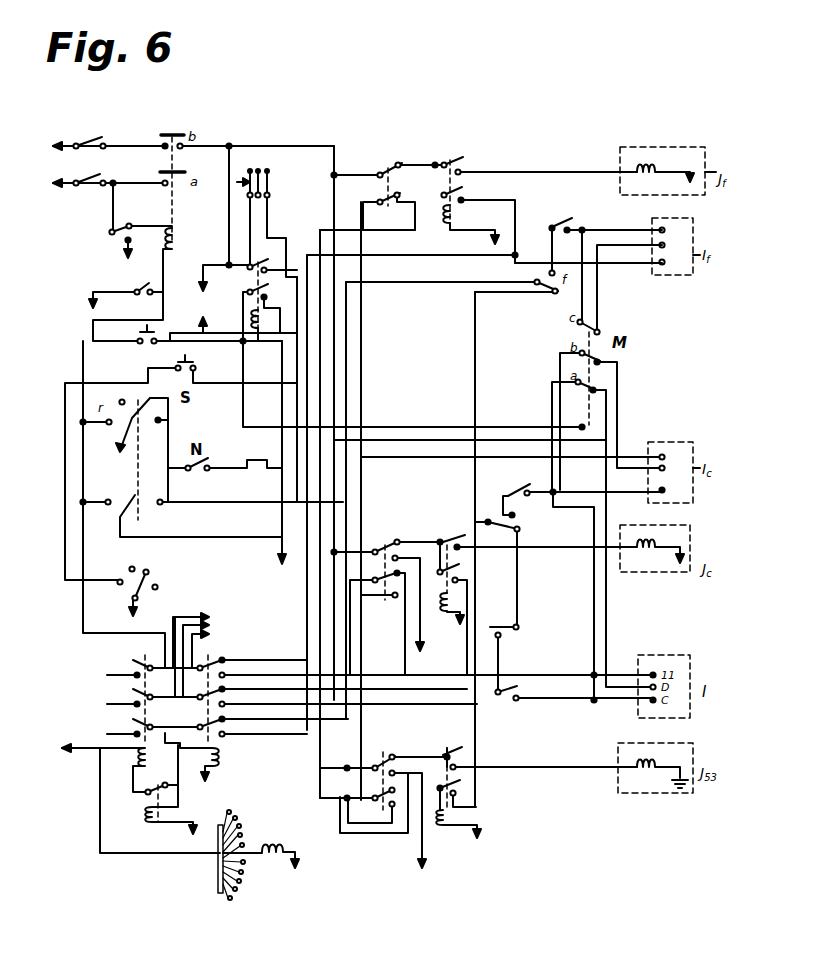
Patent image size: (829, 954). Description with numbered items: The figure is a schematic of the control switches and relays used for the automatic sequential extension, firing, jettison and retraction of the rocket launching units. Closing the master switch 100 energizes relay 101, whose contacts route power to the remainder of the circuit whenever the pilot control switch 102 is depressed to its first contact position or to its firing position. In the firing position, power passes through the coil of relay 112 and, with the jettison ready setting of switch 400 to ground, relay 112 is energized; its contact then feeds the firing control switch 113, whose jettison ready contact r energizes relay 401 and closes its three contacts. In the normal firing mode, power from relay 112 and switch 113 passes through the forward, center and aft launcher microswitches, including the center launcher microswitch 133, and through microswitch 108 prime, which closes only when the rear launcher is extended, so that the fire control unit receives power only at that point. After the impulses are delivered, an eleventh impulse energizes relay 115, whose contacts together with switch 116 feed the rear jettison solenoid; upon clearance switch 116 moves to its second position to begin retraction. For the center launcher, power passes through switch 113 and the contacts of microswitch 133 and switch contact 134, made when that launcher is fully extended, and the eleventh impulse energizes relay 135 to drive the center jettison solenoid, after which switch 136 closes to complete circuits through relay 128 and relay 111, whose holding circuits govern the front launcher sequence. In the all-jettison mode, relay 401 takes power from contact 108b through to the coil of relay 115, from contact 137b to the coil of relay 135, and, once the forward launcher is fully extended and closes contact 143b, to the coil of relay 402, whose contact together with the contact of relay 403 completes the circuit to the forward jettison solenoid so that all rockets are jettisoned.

The master switch 100 is at (137, 288).
The relay 101 is at (188, 247).
The pilot control switch 102 is at (271, 211).
The relay 112 is at (272, 297).
The firing control switch 113 is at (140, 508).
The switch 400 is at (153, 590).
The relay 401 is at (226, 760).
The relay 402 is at (534, 207).
The relay 403 is at (403, 191).
The center launcher microswitch 133 is at (519, 604).
The switch contact 134 is at (511, 487).
The relay 135 is at (434, 620).
The switch 136 is at (394, 544).
The microswitch 108 is at (505, 706).
The relay 115 is at (536, 792).
The switch 116 is at (402, 759).
The switch contact 143b is at (206, 639).
The switch contact 137b is at (211, 659).
The switch contact 108b is at (216, 649).
The relay 128 is at (418, 662).
The relay 111 is at (421, 885).